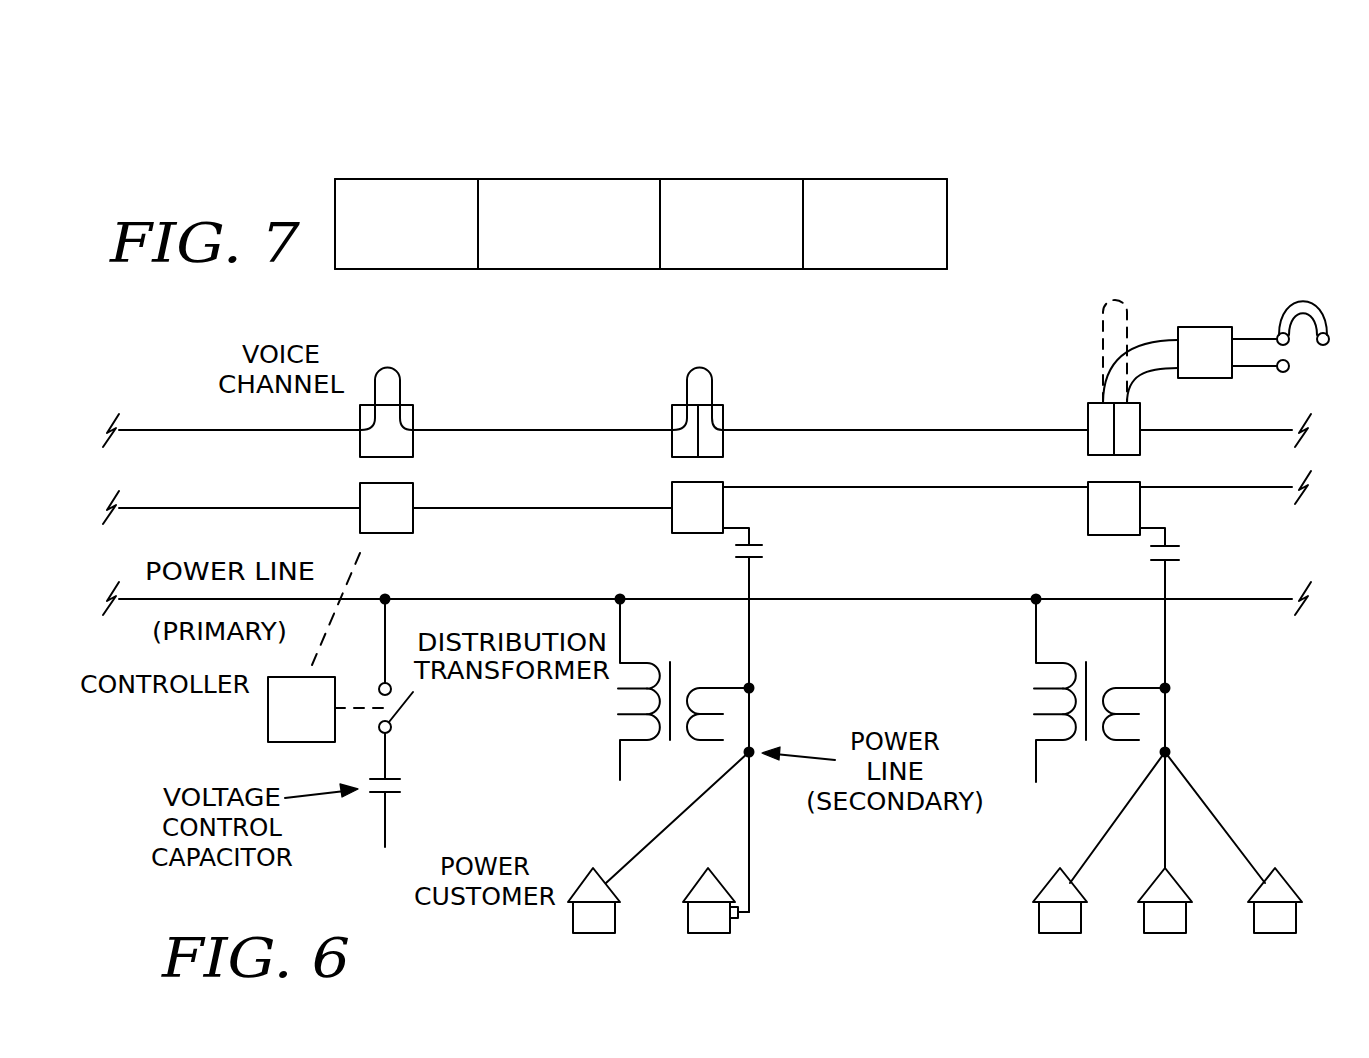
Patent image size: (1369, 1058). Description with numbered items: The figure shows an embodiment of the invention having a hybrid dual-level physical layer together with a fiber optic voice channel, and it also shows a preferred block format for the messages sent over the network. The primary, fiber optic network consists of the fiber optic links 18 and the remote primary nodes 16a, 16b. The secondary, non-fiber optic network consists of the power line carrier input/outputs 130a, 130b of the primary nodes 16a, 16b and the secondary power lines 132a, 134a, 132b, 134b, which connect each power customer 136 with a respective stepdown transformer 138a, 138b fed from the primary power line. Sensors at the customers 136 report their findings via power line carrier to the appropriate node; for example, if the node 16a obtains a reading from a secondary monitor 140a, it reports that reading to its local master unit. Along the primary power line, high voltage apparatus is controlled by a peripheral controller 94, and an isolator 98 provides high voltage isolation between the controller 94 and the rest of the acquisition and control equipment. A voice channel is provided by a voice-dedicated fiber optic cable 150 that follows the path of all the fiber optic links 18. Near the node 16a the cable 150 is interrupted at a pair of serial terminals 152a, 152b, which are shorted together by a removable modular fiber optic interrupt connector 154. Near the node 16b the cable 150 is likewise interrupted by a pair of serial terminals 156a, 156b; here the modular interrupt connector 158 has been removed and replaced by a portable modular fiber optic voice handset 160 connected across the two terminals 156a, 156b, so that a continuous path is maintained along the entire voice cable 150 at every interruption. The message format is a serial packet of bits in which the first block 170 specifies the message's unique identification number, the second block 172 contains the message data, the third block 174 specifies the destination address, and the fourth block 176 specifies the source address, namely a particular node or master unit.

In FIG. 7, the first block 170 is at (913, 177).
In FIG. 7, the second block 172 is at (773, 177).
In FIG. 7, the third block 174 is at (593, 177).
In FIG. 7, the fourth block 176 is at (410, 177).
In FIG. 6, the voice-dedicated fiber optic cable 150 is at (458, 428).
In FIG. 6, the fiber optic links 18 is at (537, 505).
In FIG. 6, the modular fiber optic interrupt connector 154 is at (690, 365).
In FIG. 6, the serial terminal 152a is at (680, 404).
In FIG. 6, the serial terminal 152b is at (716, 404).
In FIG. 6, the primary node 16a is at (724, 482).
In FIG. 6, the primary node 16b is at (1141, 482).
In FIG. 6, the modular fiber optic interrupt connector 158 is at (1104, 306).
In FIG. 6, the portable modular fiber optic voice handset 160 is at (1201, 326).
In FIG. 6, the serial terminal 156a is at (1097, 403).
In FIG. 6, the serial terminal 156b is at (1141, 409).
In FIG. 6, the isolator 98 is at (352, 578).
In FIG. 6, the peripheral controller 94 is at (268, 731).
In FIG. 6, the stepdown transformer 138a is at (678, 688).
In FIG. 6, the stepdown transformer 138b is at (1095, 688).
In FIG. 6, the power line carrier input/output 130a is at (750, 662).
In FIG. 6, the power line carrier input/output 130b is at (1166, 662).
In FIG. 6, the secondary power line 132a is at (662, 832).
In FIG. 6, the secondary power line 132b is at (752, 855).
In FIG. 6, the secondary power line 134a is at (1200, 796).
In FIG. 6, the secondary power line 134b is at (1168, 840).
In FIG. 6, the power customer 136 is at (572, 930).
In FIG. 6, the secondary monitor 140a is at (742, 908).